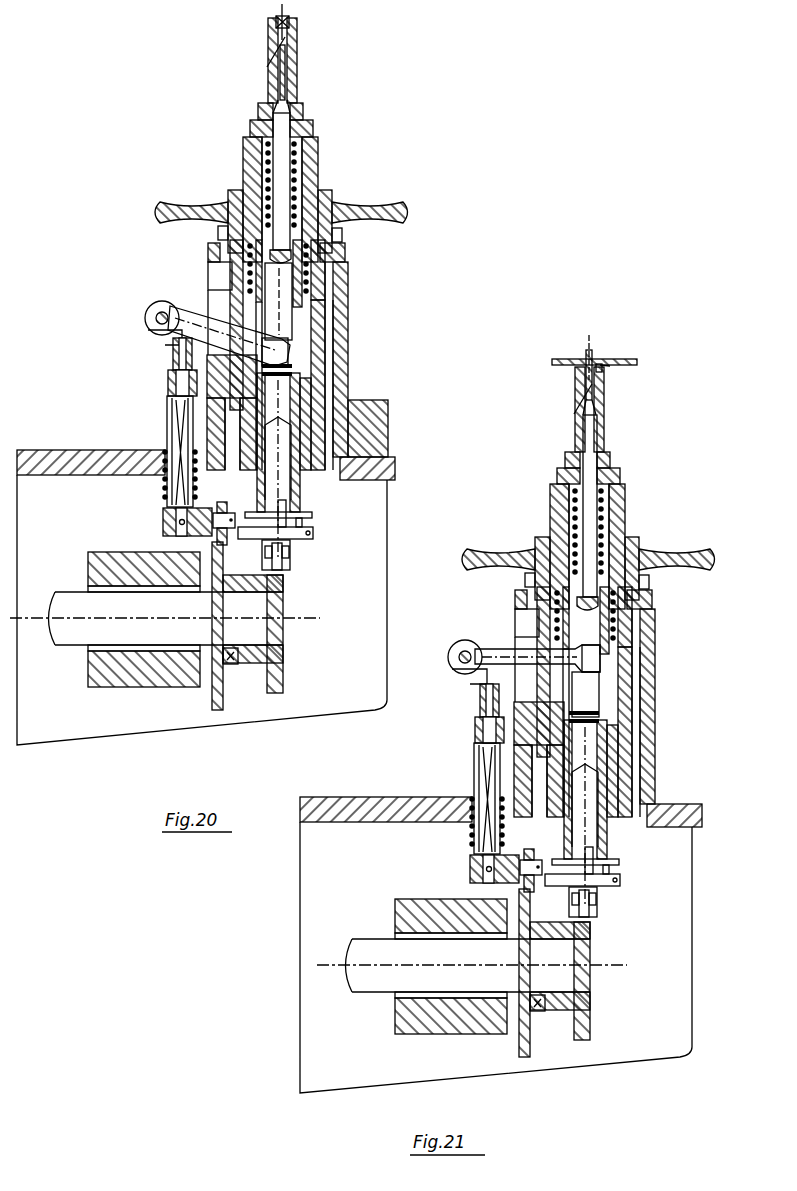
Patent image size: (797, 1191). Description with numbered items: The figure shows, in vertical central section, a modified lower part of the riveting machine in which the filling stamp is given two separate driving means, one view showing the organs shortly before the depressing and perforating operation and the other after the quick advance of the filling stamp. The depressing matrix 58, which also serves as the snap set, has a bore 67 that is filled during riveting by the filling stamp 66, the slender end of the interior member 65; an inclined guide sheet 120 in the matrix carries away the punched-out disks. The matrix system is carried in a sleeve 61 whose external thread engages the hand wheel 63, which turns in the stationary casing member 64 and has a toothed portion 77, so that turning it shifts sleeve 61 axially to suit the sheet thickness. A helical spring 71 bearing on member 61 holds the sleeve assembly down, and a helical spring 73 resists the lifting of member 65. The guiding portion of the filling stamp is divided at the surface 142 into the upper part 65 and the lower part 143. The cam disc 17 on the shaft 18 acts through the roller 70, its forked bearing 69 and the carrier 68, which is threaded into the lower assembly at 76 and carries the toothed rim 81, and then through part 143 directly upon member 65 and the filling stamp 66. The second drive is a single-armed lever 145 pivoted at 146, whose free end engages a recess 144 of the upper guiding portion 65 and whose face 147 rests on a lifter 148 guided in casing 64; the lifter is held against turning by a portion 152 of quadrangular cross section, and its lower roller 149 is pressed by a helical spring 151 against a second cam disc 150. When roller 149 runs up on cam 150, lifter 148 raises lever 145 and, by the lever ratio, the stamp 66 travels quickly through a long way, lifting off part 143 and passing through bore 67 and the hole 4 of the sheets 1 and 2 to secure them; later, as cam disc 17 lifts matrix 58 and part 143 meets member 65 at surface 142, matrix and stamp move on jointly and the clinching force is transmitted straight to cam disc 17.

In FIG. 21, the metal sheet 1 is at (626, 360).
In FIG. 21, the metal sheet 2 is at (618, 366).
In FIG. 21, the hole 4 is at (600, 362).
In FIG. 20, the cam disc 17 is at (274, 683).
In FIG. 21, the cam disc 17 is at (576, 981).
In FIG. 20, the shaft 18 is at (68, 638).
In FIG. 21, the shaft 18 is at (372, 983).
In FIG. 20, the depressing matrix 58 is at (298, 34).
In FIG. 21, the depressing matrix 58 is at (604, 400).
In FIG. 20, the sleeve 61 is at (318, 274).
In FIG. 21, the sleeve 61 is at (603, 702).
In FIG. 20, the hand wheel 63 is at (392, 208).
In FIG. 21, the hand wheel 63 is at (592, 562).
In FIG. 20, the stationary casing member 64 is at (378, 430).
In FIG. 20, the interior member 65 is at (284, 305).
In FIG. 21, the interior member 65 is at (611, 694).
In FIG. 20, the filling stamp 66 is at (287, 79).
In FIG. 21, the filling stamp 66 is at (588, 356).
In FIG. 20, the bore 67 is at (275, 25).
In FIG. 20, the carrier 68 is at (300, 530).
In FIG. 21, the carrier 68 is at (621, 891).
In FIG. 20, the forked bearing 69 is at (266, 562).
In FIG. 21, the forked bearing 69 is at (579, 916).
In FIG. 20, the roller 70 is at (286, 560).
In FIG. 21, the roller 70 is at (566, 899).
In FIG. 20, the helical spring 71 is at (342, 236).
In FIG. 21, the helical spring 71 is at (659, 598).
In FIG. 20, the helical spring 73 is at (318, 165).
In FIG. 21, the helical spring 73 is at (605, 546).
In FIG. 20, the threaded seat 76 is at (292, 488).
In FIG. 21, the threaded seat 76 is at (597, 813).
In FIG. 20, the toothed portion 77 is at (218, 236).
In FIG. 21, the toothed portion 77 is at (501, 582).
In FIG. 20, the toothed rim 81 is at (312, 537).
In FIG. 21, the toothed rim 81 is at (602, 885).
In FIG. 20, the guide sheet 120 is at (268, 50).
In FIG. 21, the guide sheet 120 is at (576, 392).
In FIG. 20, the dividing surface 142 is at (295, 373).
In FIG. 21, the dividing surface 142 is at (584, 717).
In FIG. 20, the lower guiding part 143 is at (318, 398).
In FIG. 21, the lower guiding part 143 is at (657, 732).
In FIG. 20, the recess 144 is at (290, 350).
In FIG. 21, the recess 144 is at (639, 658).
In FIG. 20, the single-armed lever 145 is at (200, 312).
In FIG. 21, the single-armed lever 145 is at (537, 638).
In FIG. 20, the pivot 146 is at (145, 320).
In FIG. 21, the pivot 146 is at (447, 659).
In FIG. 20, the face 147 is at (166, 340).
In FIG. 21, the face 147 is at (453, 699).
In FIG. 20, the lifter 148 is at (168, 383).
In FIG. 21, the lifter 148 is at (462, 727).
In FIG. 20, the roller 149 is at (221, 506).
In FIG. 21, the roller 149 is at (527, 855).
In FIG. 20, the second cam disc 150 is at (212, 700).
In FIG. 21, the second cam disc 150 is at (508, 974).
In FIG. 20, the helical spring 151 is at (163, 488).
In FIG. 21, the helical spring 151 is at (461, 824).
In FIG. 20, the quadrangular portion 152 is at (170, 420).
In FIG. 21, the quadrangular portion 152 is at (467, 813).